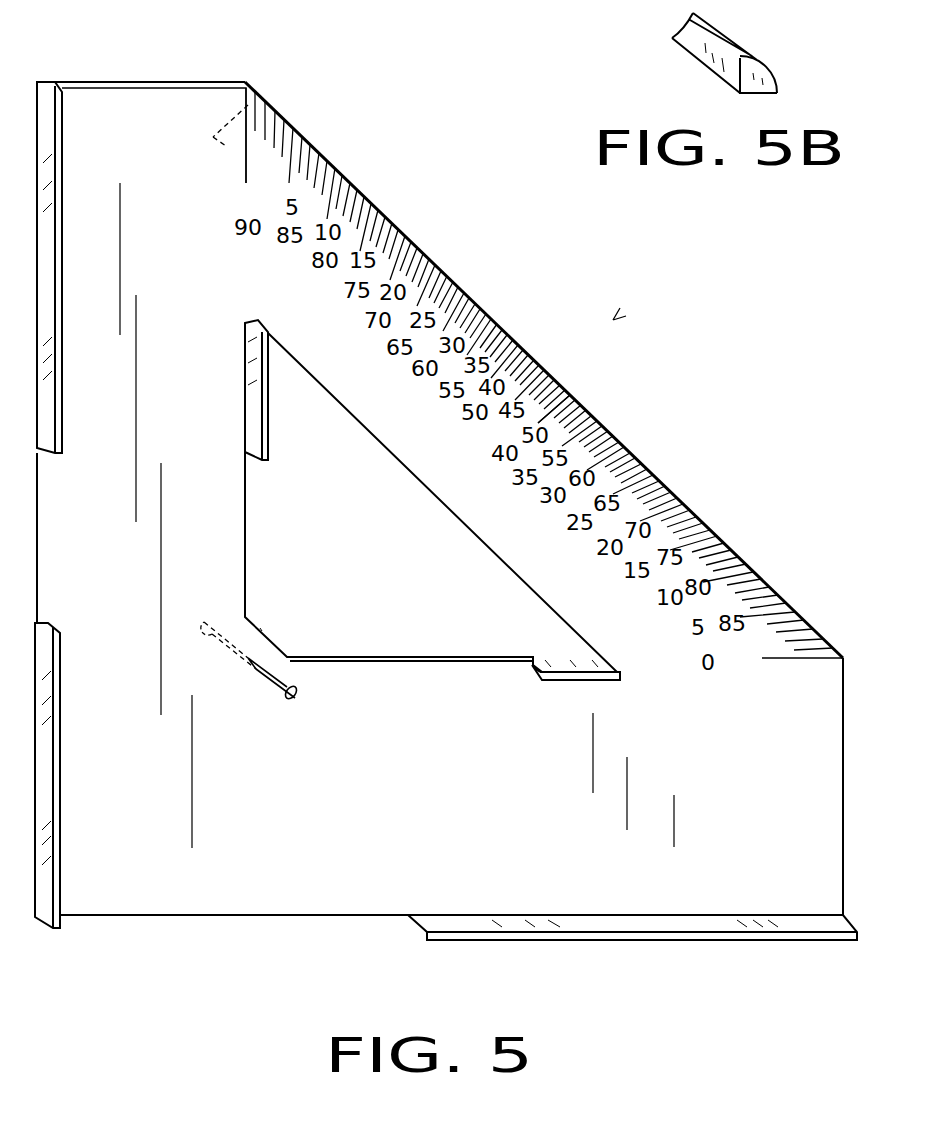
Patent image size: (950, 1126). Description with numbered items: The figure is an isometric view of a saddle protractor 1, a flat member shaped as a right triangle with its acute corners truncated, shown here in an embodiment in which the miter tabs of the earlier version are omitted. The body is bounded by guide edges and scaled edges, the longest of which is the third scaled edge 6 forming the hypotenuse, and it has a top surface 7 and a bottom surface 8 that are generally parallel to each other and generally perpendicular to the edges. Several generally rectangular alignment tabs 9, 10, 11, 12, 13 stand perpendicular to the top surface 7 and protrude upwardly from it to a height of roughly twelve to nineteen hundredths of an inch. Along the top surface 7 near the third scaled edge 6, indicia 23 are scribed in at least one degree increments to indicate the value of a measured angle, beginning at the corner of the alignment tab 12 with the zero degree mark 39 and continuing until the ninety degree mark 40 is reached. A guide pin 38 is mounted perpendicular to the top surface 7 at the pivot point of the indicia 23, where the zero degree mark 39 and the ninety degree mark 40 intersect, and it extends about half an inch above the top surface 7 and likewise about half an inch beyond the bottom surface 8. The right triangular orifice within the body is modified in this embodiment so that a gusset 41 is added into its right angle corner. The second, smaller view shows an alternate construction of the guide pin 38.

In FIG. 5, the saddle protractor 1 is at (613, 320).
In FIG. 5, the third scaled edge 6 is at (507, 337).
In FIG. 5, the top surface 7 is at (167, 133).
In FIG. 5, the bottom surface 8 is at (257, 100).
In FIG. 5, the alignment tab 9 is at (53, 272).
In FIG. 5, the alignment tab 10 is at (53, 718).
In FIG. 5, the alignment tab 11 is at (683, 942).
In FIG. 5, the alignment tab 12 is at (570, 670).
In FIG. 5, the alignment tab 13 is at (263, 405).
In FIG. 5, the indicia 23 is at (603, 430).
In FIG. 5, the guide pin 38 is at (290, 673).
In FIG. 5B, the guide pin 38 is at (773, 72).
In FIG. 5, the zero degree mark 39 is at (251, 193).
In FIG. 5, the ninety degree mark 40 is at (750, 655).
In FIG. 5, the gusset 41 is at (260, 628).